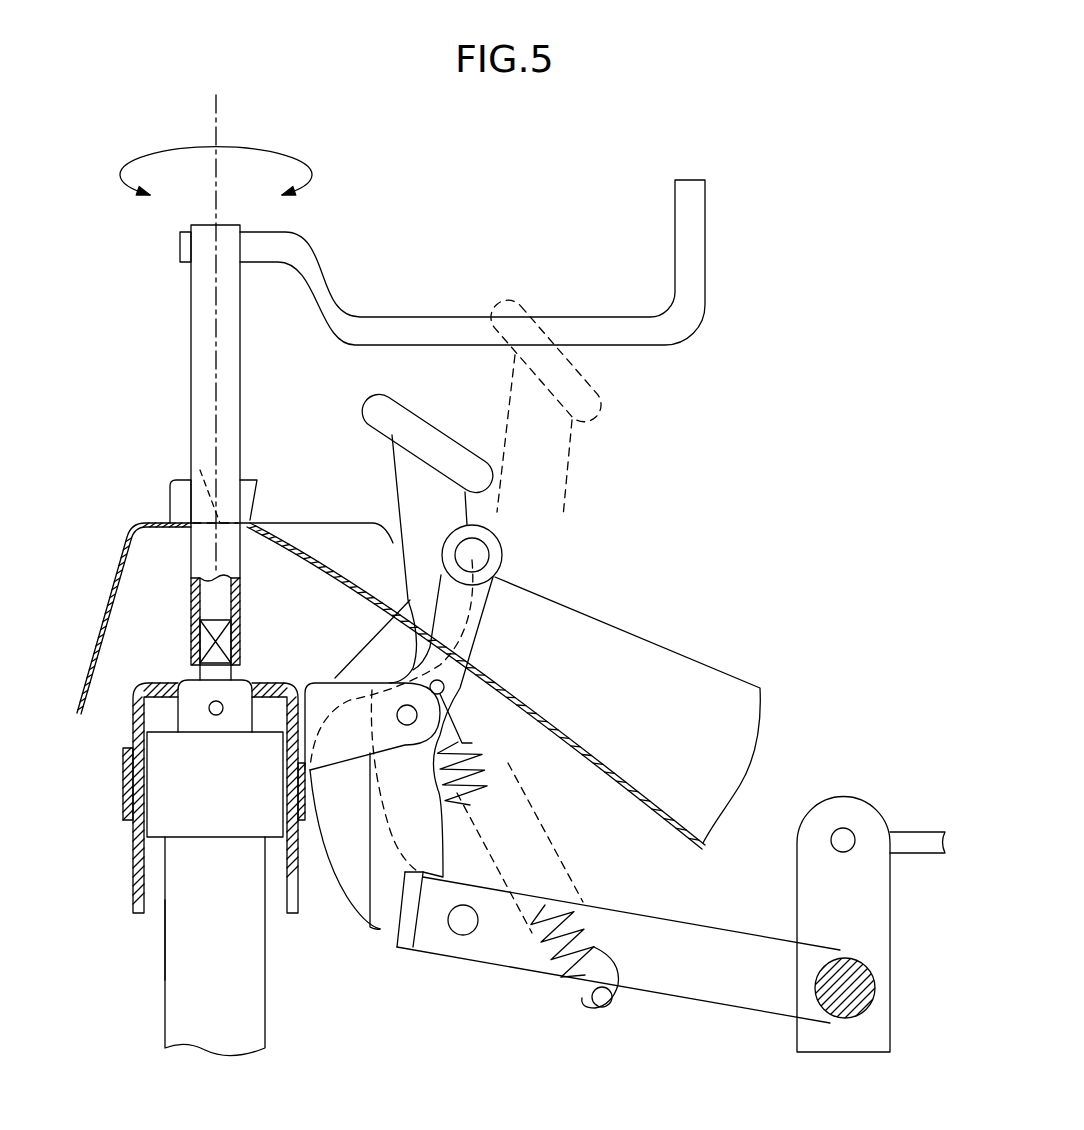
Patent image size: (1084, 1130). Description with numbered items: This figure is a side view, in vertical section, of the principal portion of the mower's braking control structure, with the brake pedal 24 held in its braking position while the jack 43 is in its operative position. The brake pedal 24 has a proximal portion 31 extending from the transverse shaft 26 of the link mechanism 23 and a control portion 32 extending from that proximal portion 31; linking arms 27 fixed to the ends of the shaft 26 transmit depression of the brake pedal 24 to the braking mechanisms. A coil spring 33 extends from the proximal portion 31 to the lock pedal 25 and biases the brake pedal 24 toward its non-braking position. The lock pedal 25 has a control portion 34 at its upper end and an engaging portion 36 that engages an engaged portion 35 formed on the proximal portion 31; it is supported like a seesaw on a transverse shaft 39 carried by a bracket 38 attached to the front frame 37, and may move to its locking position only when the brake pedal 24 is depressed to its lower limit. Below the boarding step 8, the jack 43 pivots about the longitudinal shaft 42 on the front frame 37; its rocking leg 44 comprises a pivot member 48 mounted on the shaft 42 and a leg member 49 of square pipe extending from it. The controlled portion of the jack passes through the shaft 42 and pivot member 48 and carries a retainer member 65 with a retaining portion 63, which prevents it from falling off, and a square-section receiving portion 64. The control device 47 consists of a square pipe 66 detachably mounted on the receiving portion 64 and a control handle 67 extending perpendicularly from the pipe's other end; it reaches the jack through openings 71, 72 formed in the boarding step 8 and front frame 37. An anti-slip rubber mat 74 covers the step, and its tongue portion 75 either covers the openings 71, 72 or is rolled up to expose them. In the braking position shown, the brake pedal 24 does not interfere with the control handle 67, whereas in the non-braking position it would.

The boarding step 8 is at (132, 520).
The link mechanism 23 is at (855, 813).
The brake pedal 24 is at (398, 402).
The lock pedal 25 is at (500, 527).
The transverse shaft 26 is at (860, 1000).
The linking arm 27 is at (892, 925).
The proximal portion 31 is at (688, 990).
The control portion 32 is at (382, 420).
The coil spring 33 is at (553, 968).
The control portion 34 is at (503, 553).
The engaged portion 35 is at (405, 935).
The engaging portion 36 is at (416, 895).
The front frame 37 is at (132, 890).
The bracket 38 is at (318, 704).
The transverse shaft 39 is at (403, 710).
The longitudinal shaft 42 is at (122, 785).
The jack 43 is at (145, 283).
The rocking leg 44 is at (165, 983).
The control device 47 is at (190, 392).
The pivot member 48 is at (210, 830).
The leg member 49 is at (258, 1005).
The retaining portion 63 is at (185, 712).
The receiving portion 64 is at (222, 640).
The retainer member 65 is at (180, 680).
The square pipe 66 is at (232, 365).
The control handle 67 is at (605, 330).
The opening 71 is at (200, 470).
The opening 72 is at (258, 718).
The anti-slip rubber mat 74 is at (573, 735).
The tongue portion 75 is at (250, 478).